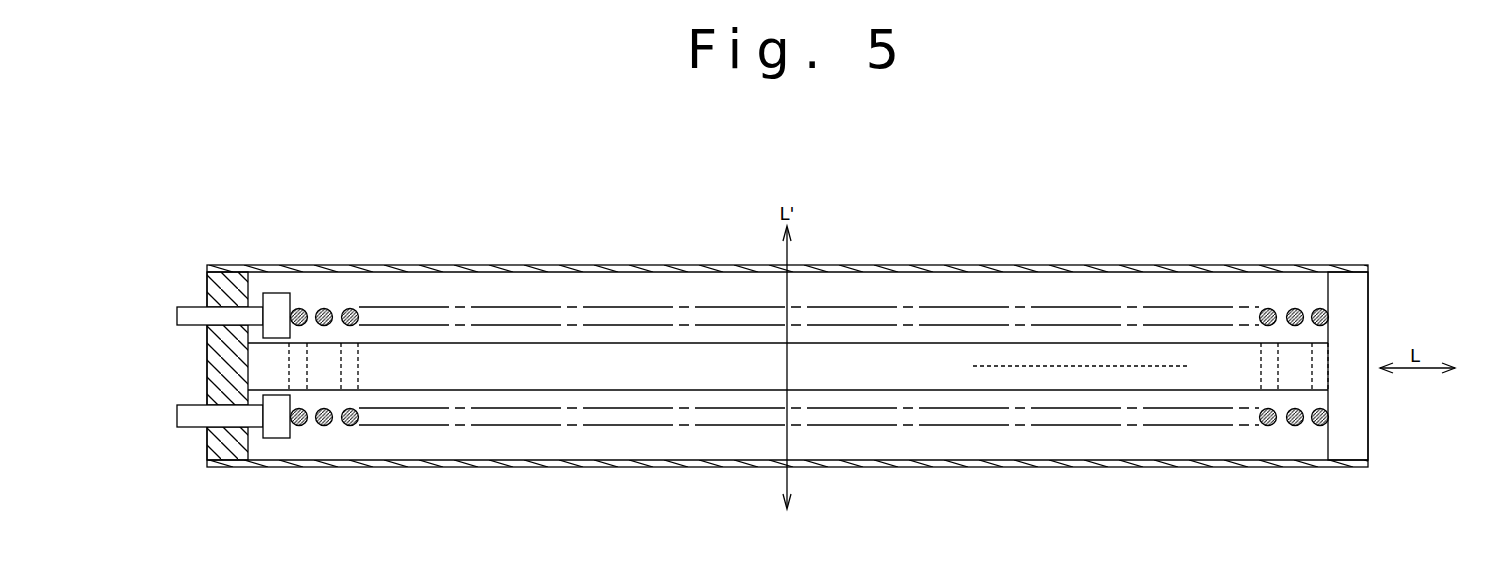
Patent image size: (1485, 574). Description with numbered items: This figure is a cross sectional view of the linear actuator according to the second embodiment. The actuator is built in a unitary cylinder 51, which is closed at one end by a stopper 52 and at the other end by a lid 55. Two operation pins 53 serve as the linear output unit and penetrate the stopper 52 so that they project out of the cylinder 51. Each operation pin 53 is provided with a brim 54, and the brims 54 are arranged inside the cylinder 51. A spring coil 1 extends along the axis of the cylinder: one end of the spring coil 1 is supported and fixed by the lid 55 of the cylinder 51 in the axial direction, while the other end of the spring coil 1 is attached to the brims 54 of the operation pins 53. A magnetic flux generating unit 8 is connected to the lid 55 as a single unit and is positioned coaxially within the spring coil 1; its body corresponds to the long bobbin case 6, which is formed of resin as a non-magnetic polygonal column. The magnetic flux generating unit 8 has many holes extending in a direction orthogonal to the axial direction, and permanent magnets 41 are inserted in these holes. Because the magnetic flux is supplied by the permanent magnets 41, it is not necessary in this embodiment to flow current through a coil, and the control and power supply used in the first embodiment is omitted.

The spring coil 1 is at (348, 434).
The bobbin case 6 is at (917, 371).
The magnetic flux generating unit 8 is at (1230, 340).
The permanent magnets 41 is at (1270, 373).
The unitary cylinder 51 is at (988, 266).
The stopper 52 is at (222, 444).
The operation pins 53 is at (186, 314).
The brim 54 is at (278, 302).
The lid 55 is at (1348, 295).